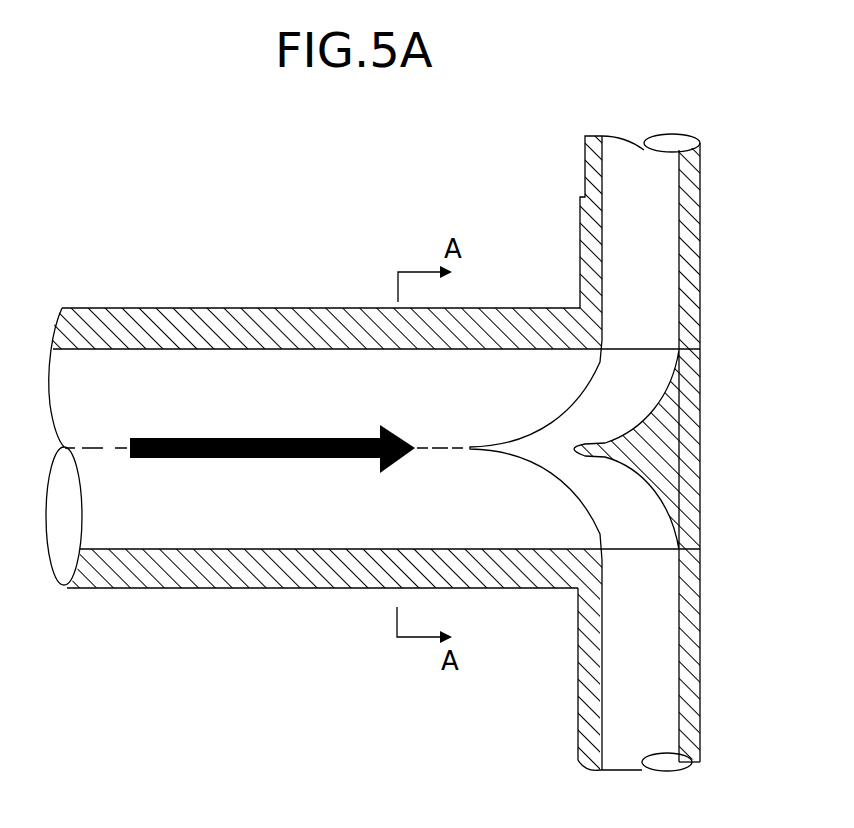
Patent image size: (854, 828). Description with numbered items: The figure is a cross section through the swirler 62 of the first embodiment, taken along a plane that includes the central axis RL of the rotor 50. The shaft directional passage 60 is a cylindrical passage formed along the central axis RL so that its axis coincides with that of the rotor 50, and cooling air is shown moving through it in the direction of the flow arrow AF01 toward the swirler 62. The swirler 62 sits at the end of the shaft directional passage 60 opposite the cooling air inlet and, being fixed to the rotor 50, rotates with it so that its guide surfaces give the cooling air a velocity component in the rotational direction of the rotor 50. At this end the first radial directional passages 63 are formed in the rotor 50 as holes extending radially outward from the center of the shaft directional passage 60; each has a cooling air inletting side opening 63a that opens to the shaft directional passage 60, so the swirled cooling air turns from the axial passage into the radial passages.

The rotor 50 is at (268, 308).
The shaft directional passage 60 is at (148, 398).
The swirler 62 is at (632, 450).
The first radial directional passage 63 is at (647, 179).
The cooling air inletting side opening 63a is at (637, 338).
The air flow AF01 is at (238, 457).
The central axis RL is at (110, 447).